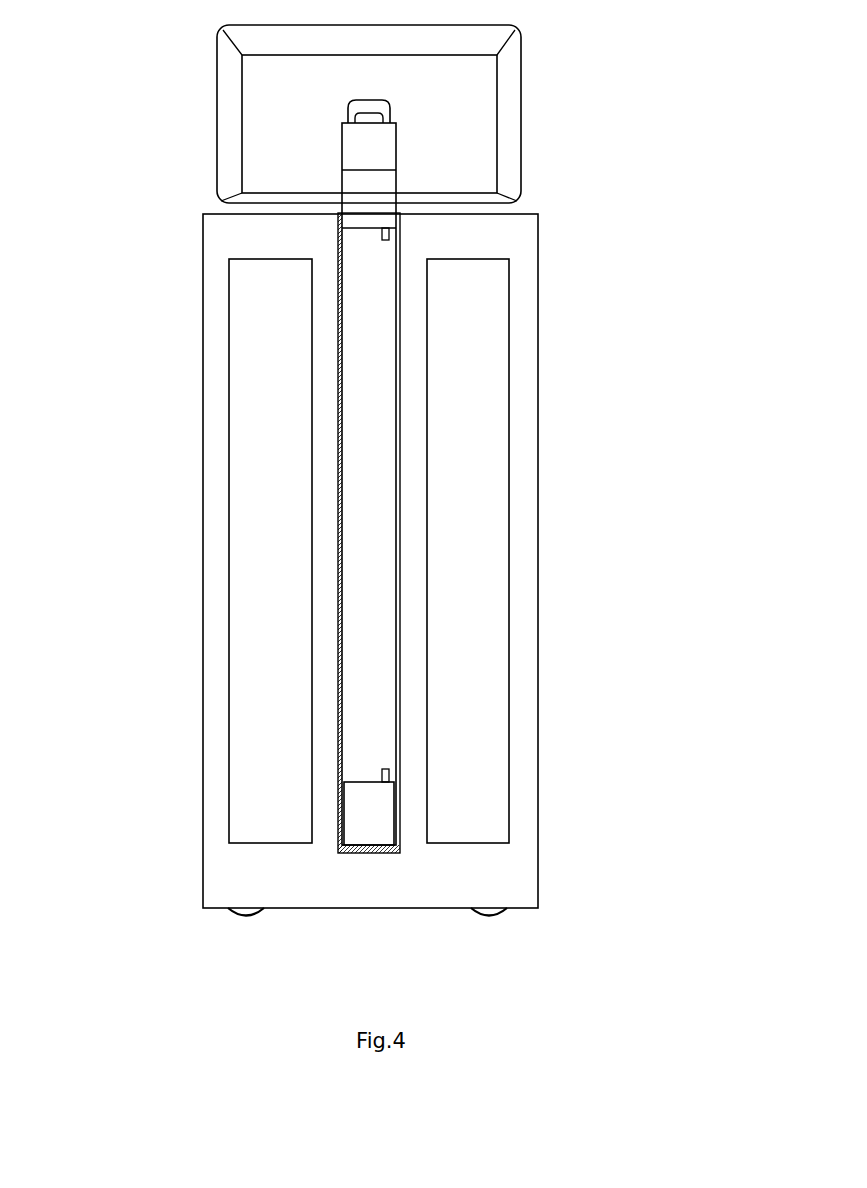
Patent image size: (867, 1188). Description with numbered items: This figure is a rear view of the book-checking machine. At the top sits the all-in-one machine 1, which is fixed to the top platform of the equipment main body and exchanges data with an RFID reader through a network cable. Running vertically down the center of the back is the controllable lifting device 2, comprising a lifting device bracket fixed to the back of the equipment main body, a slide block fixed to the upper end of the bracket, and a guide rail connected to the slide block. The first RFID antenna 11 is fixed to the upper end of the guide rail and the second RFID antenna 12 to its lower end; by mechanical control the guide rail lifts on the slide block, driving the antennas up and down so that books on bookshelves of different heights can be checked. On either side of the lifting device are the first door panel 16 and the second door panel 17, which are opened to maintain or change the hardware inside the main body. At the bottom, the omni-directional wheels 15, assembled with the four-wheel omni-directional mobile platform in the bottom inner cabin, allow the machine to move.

The all-in-one machine 1 is at (275, 89).
The controllable lifting device 2 is at (377, 517).
The first RFID antenna 11 is at (377, 203).
The second RFID antenna 12 is at (377, 813).
The omni-directional wheels 15 is at (247, 921).
The first door panel 16 is at (470, 386).
The second door panel 17 is at (276, 386).